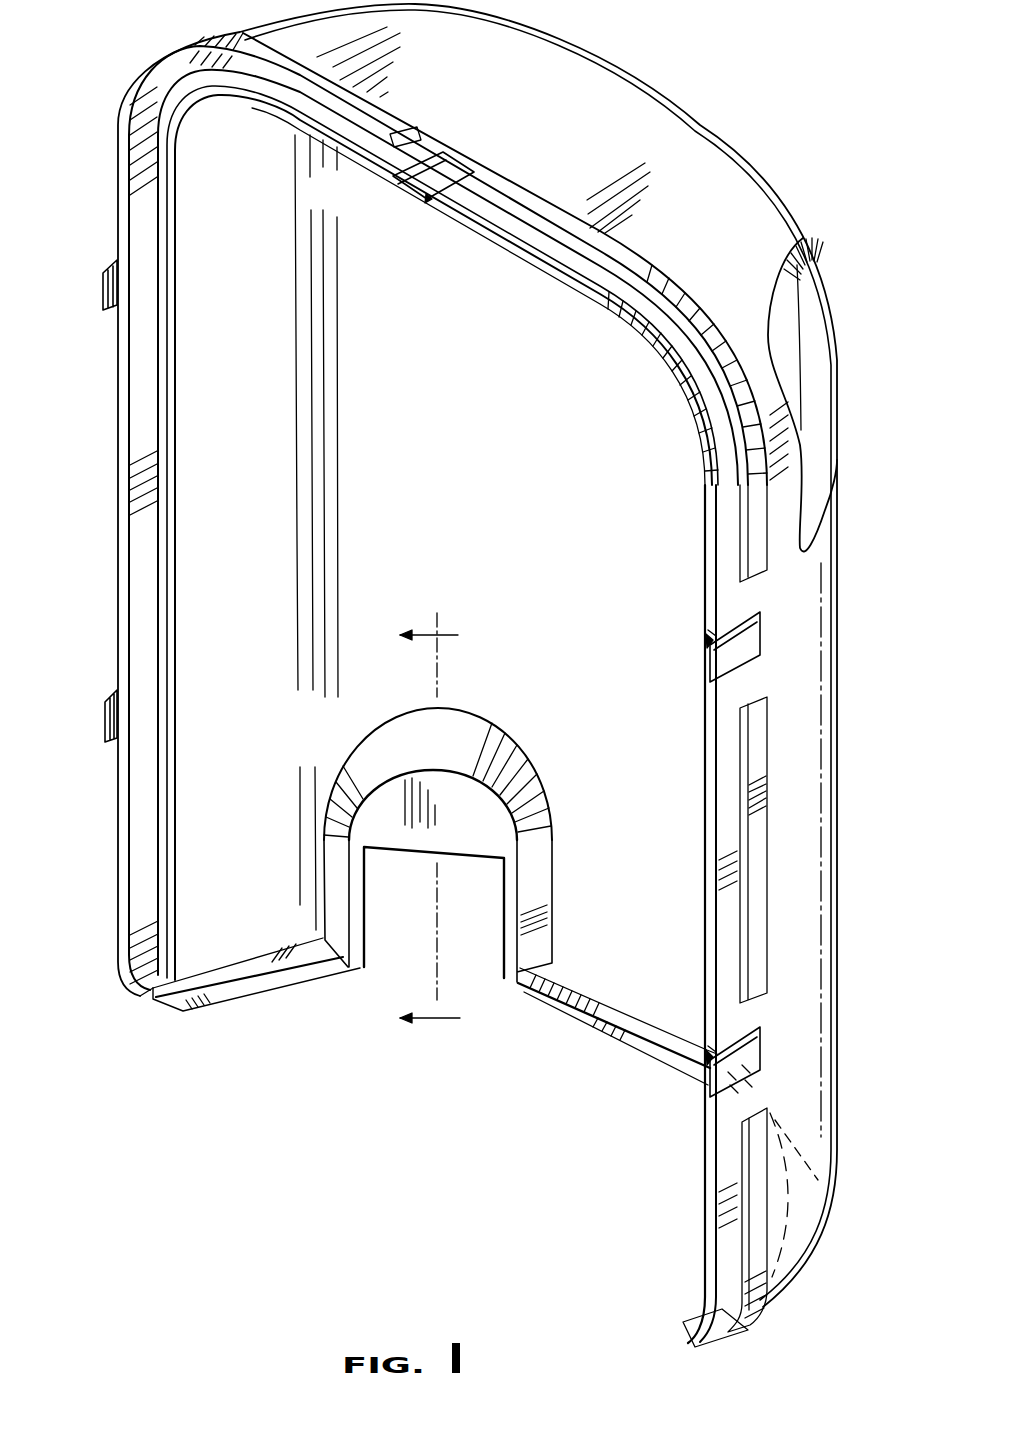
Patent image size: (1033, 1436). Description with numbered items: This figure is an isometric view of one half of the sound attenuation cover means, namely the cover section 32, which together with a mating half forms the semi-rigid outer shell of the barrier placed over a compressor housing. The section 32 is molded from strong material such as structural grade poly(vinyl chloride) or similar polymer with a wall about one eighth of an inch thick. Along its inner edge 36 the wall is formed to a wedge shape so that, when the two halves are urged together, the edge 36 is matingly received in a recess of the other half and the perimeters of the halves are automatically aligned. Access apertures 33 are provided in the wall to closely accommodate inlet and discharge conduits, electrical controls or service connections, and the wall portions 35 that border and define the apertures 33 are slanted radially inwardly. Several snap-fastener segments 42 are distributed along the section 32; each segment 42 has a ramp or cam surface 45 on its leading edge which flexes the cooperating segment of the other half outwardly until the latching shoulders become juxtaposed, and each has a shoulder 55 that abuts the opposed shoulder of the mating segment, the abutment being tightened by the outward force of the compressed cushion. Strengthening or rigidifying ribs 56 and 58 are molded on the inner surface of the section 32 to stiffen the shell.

The cover section 32 is at (490, 476).
The access aperture 33 is at (787, 337).
The wall portion bordering access aperture 35 is at (373, 750).
The inner edge 36 is at (143, 533).
The snap-fastener segment 42 is at (433, 173).
The ramp or cam surface 45 is at (428, 200).
The shoulder 55 is at (430, 200).
The strengthening rib 56 is at (240, 968).
The strengthening rib 58 is at (177, 690).